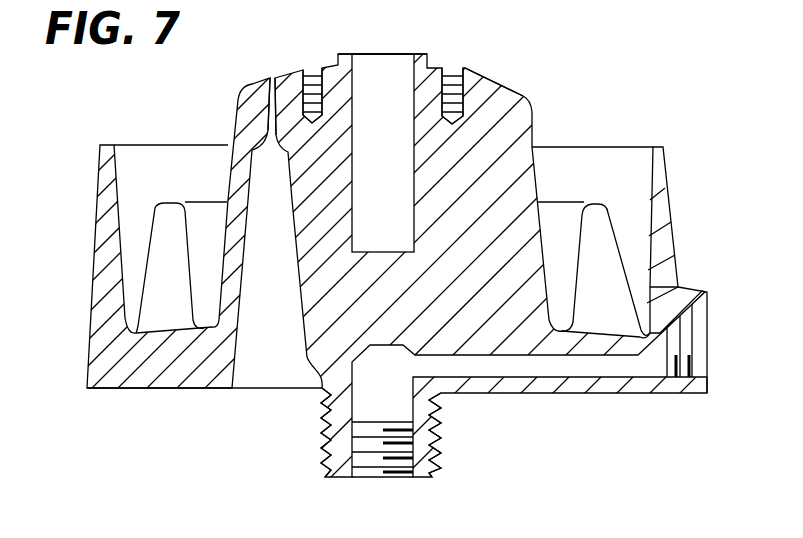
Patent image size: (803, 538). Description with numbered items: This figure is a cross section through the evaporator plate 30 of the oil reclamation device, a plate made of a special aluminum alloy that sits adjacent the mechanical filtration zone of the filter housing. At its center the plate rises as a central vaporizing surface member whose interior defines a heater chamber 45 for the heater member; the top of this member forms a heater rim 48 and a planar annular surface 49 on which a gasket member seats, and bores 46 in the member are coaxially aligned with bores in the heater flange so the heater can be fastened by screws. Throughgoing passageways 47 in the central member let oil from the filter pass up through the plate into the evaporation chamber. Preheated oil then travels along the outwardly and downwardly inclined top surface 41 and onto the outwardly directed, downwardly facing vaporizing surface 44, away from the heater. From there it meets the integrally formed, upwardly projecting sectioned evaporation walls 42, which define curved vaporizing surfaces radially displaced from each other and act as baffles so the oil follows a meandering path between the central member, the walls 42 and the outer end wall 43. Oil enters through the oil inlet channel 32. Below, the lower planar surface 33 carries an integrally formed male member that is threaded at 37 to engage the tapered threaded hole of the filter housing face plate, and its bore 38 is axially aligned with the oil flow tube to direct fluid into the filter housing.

The evaporator plate 30 is at (694, 207).
The oil inlet channel 32 is at (707, 357).
The lower planar surface 33 is at (152, 389).
The threads 37 is at (321, 434).
The bore 38 is at (389, 478).
The top surface 41 is at (501, 82).
The evaporation walls 42 is at (167, 203).
The end wall 43 is at (100, 163).
The vaporizing surface 44 is at (534, 135).
The heater chamber 45 is at (395, 134).
The bores 46 is at (312, 67).
The passageways 47 is at (273, 78).
The heater rim 48 is at (427, 62).
The planar annular surface 49 is at (436, 68).